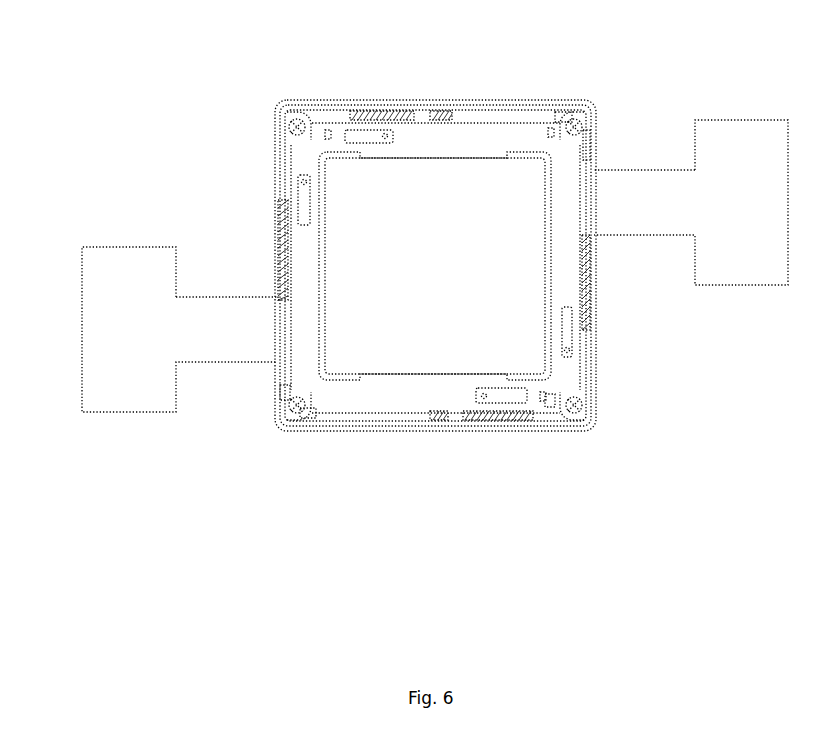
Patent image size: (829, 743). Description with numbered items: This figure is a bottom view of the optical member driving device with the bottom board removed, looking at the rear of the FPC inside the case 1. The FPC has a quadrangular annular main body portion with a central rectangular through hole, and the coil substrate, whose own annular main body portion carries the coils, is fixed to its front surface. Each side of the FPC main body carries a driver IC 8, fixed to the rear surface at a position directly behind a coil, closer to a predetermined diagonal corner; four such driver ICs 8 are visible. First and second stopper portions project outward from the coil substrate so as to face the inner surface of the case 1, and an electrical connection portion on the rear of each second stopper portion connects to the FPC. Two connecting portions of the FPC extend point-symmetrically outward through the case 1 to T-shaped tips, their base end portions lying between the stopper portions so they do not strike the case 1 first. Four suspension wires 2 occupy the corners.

The case 1 is at (591, 101).
The suspension wires 2 is at (297, 127).
The driver ICs 8 is at (360, 132).